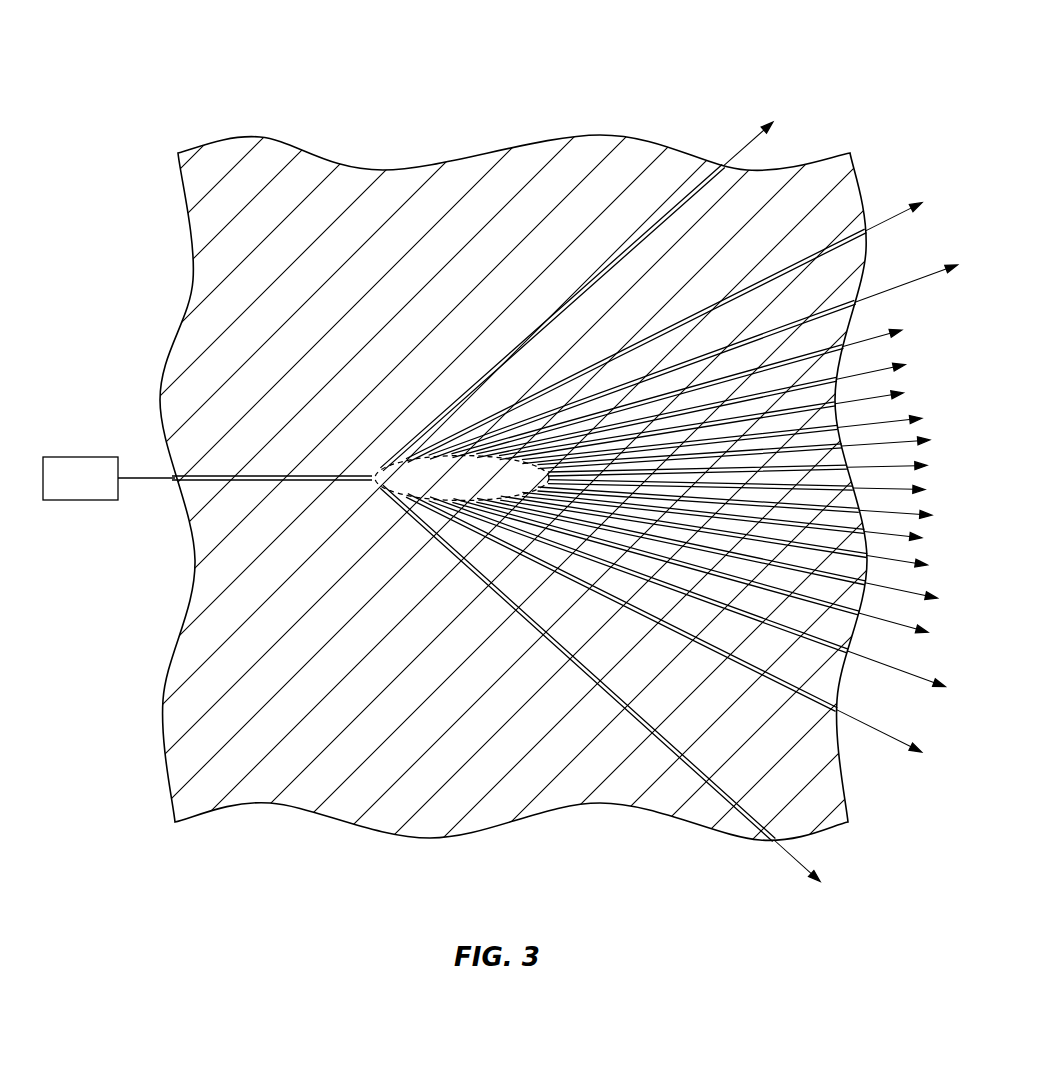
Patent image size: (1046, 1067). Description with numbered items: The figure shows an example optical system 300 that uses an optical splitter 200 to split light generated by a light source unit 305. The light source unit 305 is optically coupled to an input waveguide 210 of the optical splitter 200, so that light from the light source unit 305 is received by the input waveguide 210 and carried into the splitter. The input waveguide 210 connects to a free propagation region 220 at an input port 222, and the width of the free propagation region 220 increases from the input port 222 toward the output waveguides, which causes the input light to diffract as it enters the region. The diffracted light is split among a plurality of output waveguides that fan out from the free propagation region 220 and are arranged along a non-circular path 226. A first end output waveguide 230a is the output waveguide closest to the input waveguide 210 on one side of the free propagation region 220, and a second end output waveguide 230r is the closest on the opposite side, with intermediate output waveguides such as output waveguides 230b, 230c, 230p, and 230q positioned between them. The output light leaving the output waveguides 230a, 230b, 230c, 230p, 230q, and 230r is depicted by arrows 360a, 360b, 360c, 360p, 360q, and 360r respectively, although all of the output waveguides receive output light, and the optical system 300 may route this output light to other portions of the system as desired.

The optical system 300 is at (118, 62).
The optical splitter 200 is at (291, 153).
The light source unit 305 is at (78, 457).
The input waveguide 210 is at (195, 483).
The free propagation region 220 is at (485, 468).
The input port 222 is at (388, 462).
The non-circular path 226 is at (394, 452).
The first end output waveguide 230a is at (688, 195).
The intermediate output waveguide 230b is at (855, 248).
The intermediate output waveguide 230c is at (843, 315).
The intermediate output waveguide 230p is at (840, 642).
The intermediate output waveguide 230q is at (828, 698).
The second end output waveguide 230r is at (750, 826).
The output light arrow 360a is at (750, 152).
The output light arrow 360b is at (893, 215).
The output light arrow 360c is at (931, 277).
The output light arrow 360p is at (921, 683).
The output light arrow 360q is at (886, 738).
The output light arrow 360r is at (795, 860).